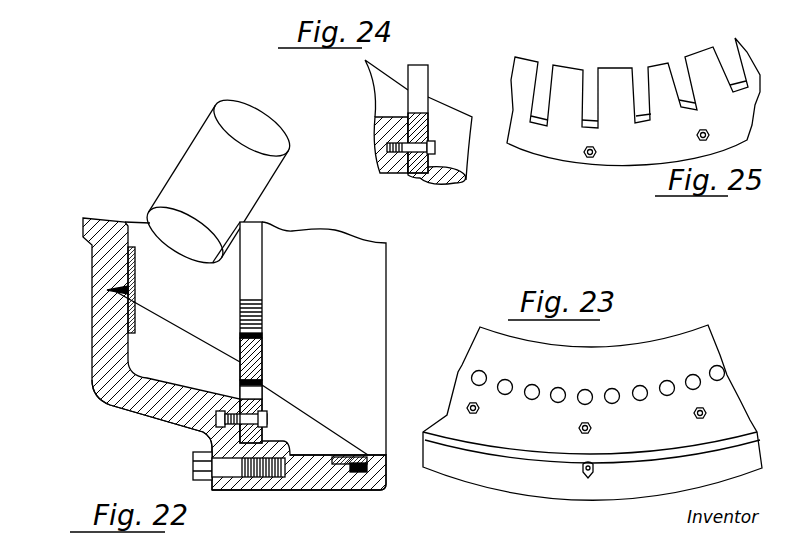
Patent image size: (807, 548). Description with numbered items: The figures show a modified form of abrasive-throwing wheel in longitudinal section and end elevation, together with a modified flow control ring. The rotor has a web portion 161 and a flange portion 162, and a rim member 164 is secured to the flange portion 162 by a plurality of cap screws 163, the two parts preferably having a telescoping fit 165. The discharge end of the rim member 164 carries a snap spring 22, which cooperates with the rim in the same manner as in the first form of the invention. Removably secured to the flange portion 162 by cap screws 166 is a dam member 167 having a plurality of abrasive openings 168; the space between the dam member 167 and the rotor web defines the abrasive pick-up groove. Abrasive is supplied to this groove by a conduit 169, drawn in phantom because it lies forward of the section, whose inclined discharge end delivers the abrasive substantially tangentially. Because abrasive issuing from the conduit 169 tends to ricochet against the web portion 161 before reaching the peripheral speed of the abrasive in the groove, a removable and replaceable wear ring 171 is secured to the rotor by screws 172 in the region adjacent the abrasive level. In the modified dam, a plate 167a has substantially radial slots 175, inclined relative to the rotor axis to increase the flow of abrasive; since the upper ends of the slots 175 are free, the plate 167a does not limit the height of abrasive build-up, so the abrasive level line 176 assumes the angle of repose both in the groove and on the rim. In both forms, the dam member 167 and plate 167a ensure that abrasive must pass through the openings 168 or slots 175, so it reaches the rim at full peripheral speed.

In FIG. 22, the snap spring 22 is at (388, 460).
In FIG. 23, the snap spring 22 is at (672, 460).
In FIG. 22, the web portion 161 is at (92, 343).
In FIG. 22, the flange portion 162 is at (183, 418).
In FIG. 24, the flange portion 162 is at (396, 174).
In FIG. 22, the cap screws 163 is at (193, 466).
In FIG. 22, the rim member 164 is at (347, 491).
In FIG. 24, the rim member 164 is at (447, 183).
In FIG. 23, the rim member 164 is at (533, 488).
In FIG. 22, the telescoping fit 165 is at (233, 491).
In FIG. 22, the cap screws 166 is at (268, 414).
In FIG. 24, the cap screws 166 is at (390, 150).
In FIG. 23, the cap screws 166 is at (697, 413).
In FIG. 22, the dam member 167 is at (262, 396).
In FIG. 23, the dam member 167 is at (545, 429).
In FIG. 24, the plate 167a is at (428, 127).
In FIG. 25, the plate 167a is at (650, 150).
In FIG. 22, the abrasive openings 168 is at (262, 371).
In FIG. 23, the abrasive openings 168 is at (582, 390).
In FIG. 22, the conduit 169 is at (180, 178).
In FIG. 22, the wear ring 171 is at (134, 274).
In FIG. 22, the screws 172 is at (132, 288).
In FIG. 22, the radial slots 175 is at (166, 317).
In FIG. 24, the radial slots 175 is at (423, 91).
In FIG. 25, the radial slots 175 is at (633, 70).
In FIG. 24, the line 176 is at (390, 80).